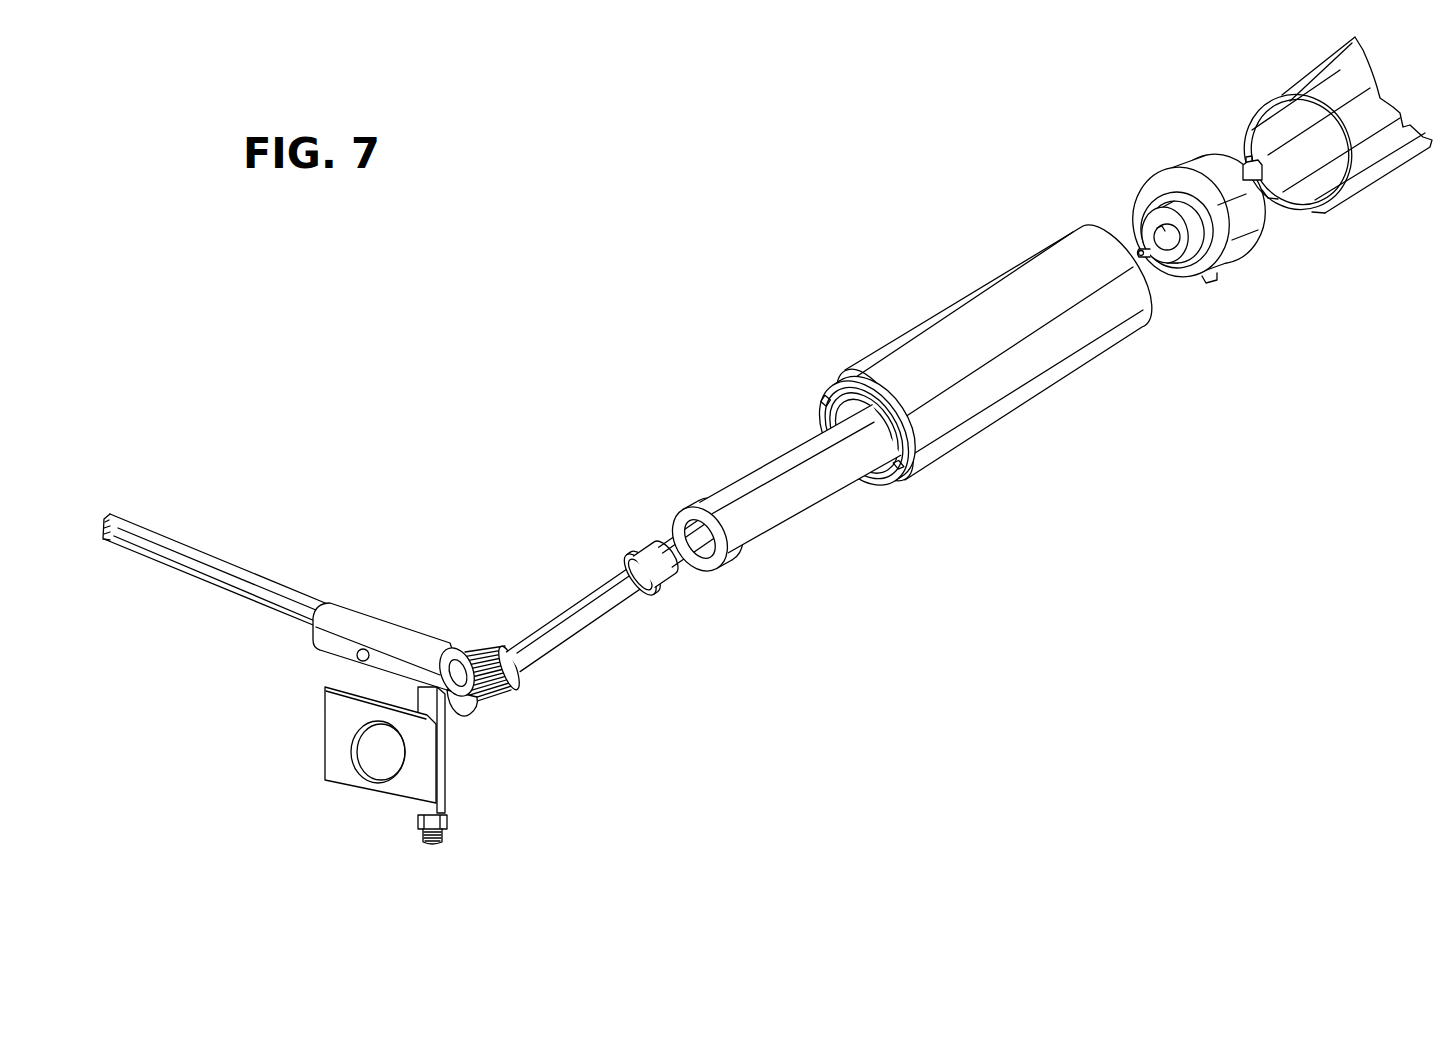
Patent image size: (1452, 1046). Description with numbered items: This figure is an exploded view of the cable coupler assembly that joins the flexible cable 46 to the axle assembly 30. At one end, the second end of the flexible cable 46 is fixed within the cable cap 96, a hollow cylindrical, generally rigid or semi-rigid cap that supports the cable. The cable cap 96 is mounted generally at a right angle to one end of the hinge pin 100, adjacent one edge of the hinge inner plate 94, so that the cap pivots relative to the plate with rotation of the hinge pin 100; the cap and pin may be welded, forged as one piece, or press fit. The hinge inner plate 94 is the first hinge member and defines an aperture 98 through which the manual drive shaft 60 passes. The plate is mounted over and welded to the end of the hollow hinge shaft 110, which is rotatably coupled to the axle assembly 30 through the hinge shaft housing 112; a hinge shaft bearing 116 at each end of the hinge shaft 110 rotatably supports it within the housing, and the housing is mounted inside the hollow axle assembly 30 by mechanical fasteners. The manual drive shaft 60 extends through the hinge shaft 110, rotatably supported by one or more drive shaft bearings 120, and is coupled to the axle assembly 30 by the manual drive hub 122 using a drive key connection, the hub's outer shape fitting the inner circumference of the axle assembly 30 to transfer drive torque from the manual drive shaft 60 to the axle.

The axle assembly 30 is at (1330, 95).
The flexible cable 46 is at (213, 567).
The manual drive shaft 60 is at (577, 625).
The hinge inner plate 94 is at (338, 744).
The cable cap 96 is at (400, 640).
The aperture 98 is at (376, 758).
The hinge pin 100 is at (438, 843).
The hinge shaft 110 is at (783, 470).
The hinge shaft housing 112 is at (1008, 327).
The hinge shaft bearing 116 is at (827, 393).
The drive shaft bearing 120 is at (672, 578).
The manual drive hub 122 is at (1242, 253).